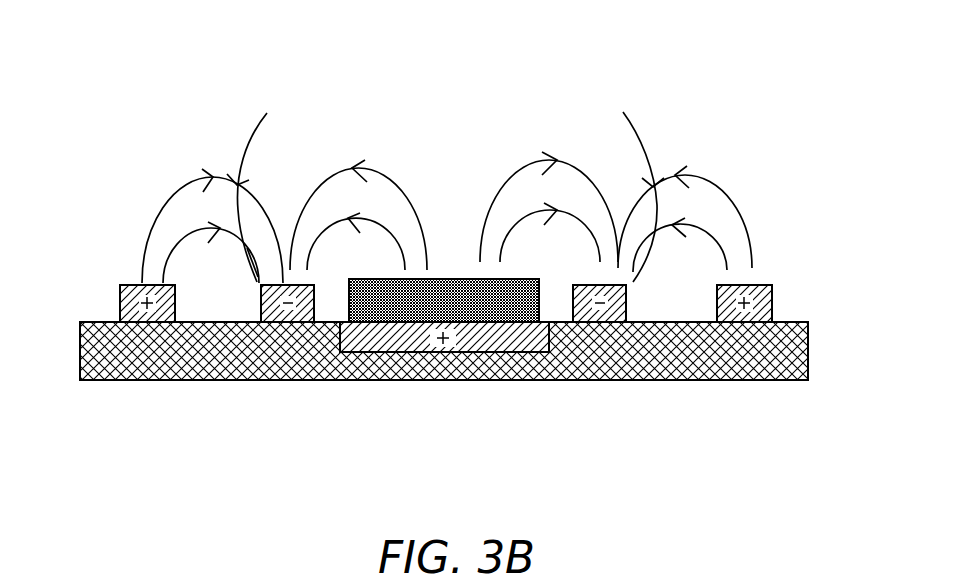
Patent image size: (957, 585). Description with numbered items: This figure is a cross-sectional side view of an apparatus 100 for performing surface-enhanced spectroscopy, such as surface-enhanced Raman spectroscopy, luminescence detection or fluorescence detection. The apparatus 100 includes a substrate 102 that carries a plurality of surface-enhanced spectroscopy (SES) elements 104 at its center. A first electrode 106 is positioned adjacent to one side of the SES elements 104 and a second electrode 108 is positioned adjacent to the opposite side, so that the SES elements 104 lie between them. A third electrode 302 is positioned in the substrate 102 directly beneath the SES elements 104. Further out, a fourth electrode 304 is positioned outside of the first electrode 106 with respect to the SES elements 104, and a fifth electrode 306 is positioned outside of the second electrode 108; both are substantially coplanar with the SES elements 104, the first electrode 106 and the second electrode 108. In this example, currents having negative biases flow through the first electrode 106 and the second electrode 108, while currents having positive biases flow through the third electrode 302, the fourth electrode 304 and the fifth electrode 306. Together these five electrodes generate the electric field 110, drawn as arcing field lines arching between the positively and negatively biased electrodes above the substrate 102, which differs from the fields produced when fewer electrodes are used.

The apparatus 100 is at (179, 88).
The substrate 102 is at (127, 381).
The plurality of surface-enhanced spectroscopy (SES) elements 104 is at (387, 322).
The first electrode 106 is at (287, 323).
The second electrode 108 is at (610, 323).
The electric field 110 is at (440, 147).
The third electrode 302 is at (487, 352).
The fourth electrode 304 is at (131, 285).
The fifth electrode 306 is at (767, 284).